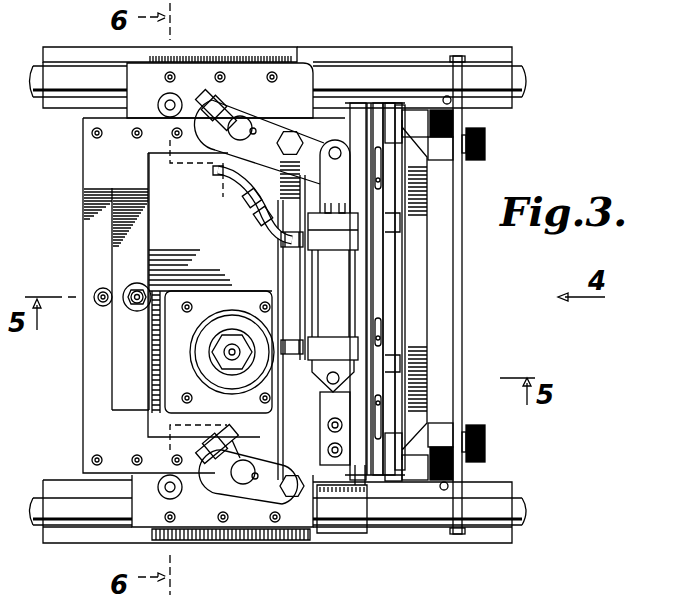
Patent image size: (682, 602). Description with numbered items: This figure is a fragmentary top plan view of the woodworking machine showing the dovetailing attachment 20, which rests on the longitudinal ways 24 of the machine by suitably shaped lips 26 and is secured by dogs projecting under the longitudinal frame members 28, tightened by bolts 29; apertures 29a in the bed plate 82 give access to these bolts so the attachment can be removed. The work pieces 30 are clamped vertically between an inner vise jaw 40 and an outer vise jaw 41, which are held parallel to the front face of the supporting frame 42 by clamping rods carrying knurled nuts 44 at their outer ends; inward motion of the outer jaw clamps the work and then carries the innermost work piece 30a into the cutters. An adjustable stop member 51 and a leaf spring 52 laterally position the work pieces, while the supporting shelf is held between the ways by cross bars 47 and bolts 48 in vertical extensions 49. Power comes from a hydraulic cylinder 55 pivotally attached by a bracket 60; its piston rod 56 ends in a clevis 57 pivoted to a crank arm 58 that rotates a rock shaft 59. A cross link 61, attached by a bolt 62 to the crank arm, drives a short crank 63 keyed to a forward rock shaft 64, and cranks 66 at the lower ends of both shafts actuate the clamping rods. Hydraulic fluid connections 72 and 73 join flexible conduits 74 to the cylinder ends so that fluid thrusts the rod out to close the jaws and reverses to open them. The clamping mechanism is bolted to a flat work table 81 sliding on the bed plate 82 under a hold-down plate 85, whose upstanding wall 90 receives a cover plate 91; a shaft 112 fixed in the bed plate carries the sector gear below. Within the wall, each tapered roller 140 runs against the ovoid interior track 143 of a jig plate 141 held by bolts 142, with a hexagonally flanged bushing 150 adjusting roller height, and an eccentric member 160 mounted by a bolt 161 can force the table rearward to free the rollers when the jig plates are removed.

The dovetailing attachment 20 is at (68, 366).
The longitudinal ways 24 is at (520, 68).
The lips 26 is at (278, 54).
The longitudinal frame members 28 is at (506, 98).
The bolts 29 is at (160, 488).
The apertures 29a is at (176, 96).
The work pieces 30 is at (398, 243).
The innermost work piece 30a is at (388, 330).
The inner vise jaw 40 is at (377, 268).
The outer vise jaw 41 is at (418, 286).
The supporting frame 42 is at (362, 482).
The knurled nuts 44 is at (455, 123).
The cross bars 47 is at (458, 402).
The bolts 48 is at (487, 145).
The vertical extensions 49 is at (447, 162).
The adjustable stop member 51 is at (392, 228).
The leaf spring 52 is at (398, 362).
The hydraulic cylinder 55 is at (332, 292).
The piston rod 56 is at (337, 208).
The clevis 57 is at (336, 146).
The crank arm 58 is at (277, 123).
The rock shaft 59 is at (241, 118).
The bracket 60 is at (326, 368).
The cross link 61 is at (292, 275).
The bolt 62 is at (293, 134).
The short crank 63 is at (257, 489).
The forward rock shaft 64 is at (302, 469).
The cranks 66 is at (249, 443).
The hydraulic fluid connection 72 is at (287, 248).
The hydraulic fluid connection 73 is at (293, 356).
The flexible conduits 74 is at (237, 195).
The work table 81 is at (116, 277).
The bed plate 82 is at (146, 527).
The hold-down plate 85 is at (93, 433).
The upstanding wall 90 is at (152, 383).
The cover plate 91 is at (204, 295).
The shaft 112 is at (99, 301).
The tapered roller 140 is at (236, 327).
The jig plate 141 is at (215, 292).
The bolts 142 is at (260, 401).
The interior track 143 is at (211, 381).
The hexagonally flanged bushing 150 is at (250, 345).
The eccentric member 160 is at (138, 306).
The bolt 161 is at (136, 291).